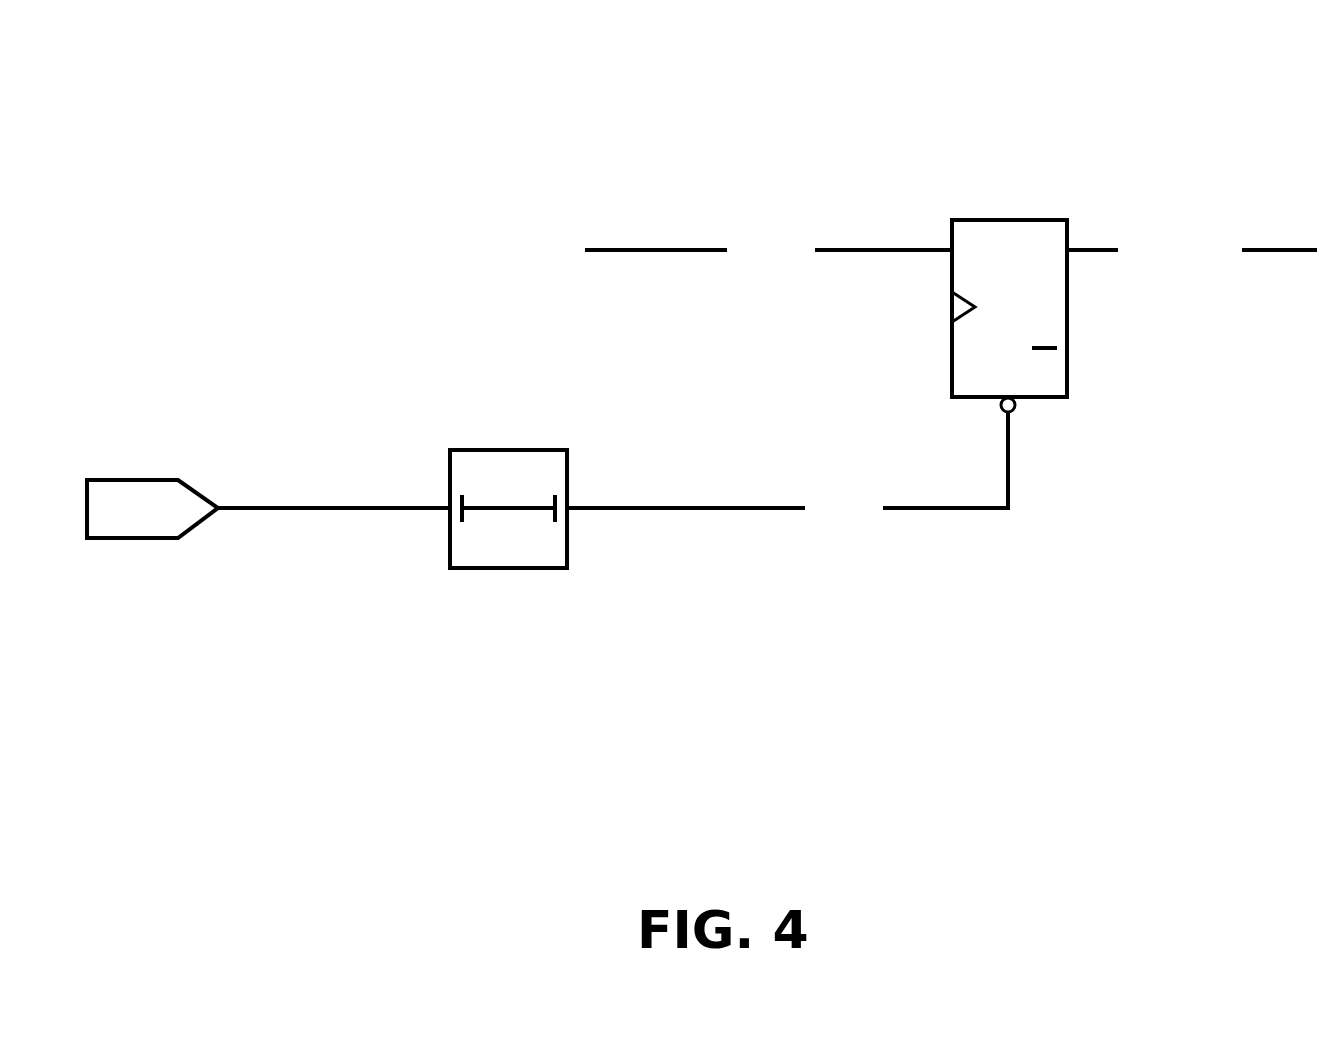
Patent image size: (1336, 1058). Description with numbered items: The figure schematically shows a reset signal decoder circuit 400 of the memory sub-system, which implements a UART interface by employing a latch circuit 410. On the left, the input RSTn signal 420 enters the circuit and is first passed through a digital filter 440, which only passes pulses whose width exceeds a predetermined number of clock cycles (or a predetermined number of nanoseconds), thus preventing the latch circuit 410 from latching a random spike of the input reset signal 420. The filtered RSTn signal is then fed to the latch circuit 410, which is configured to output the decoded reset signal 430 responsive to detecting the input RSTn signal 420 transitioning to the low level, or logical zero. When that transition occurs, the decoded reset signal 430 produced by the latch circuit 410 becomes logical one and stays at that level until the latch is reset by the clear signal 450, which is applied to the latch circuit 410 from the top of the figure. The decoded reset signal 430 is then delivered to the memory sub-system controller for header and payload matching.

The reset signal decoder circuit 400 is at (1135, 65).
The latch circuit 410 is at (1012, 208).
The input RSTn signal 420 is at (268, 484).
The decoded reset signal 430 is at (1192, 249).
The digital filter 440 is at (519, 532).
The clear signal 450 is at (768, 231).